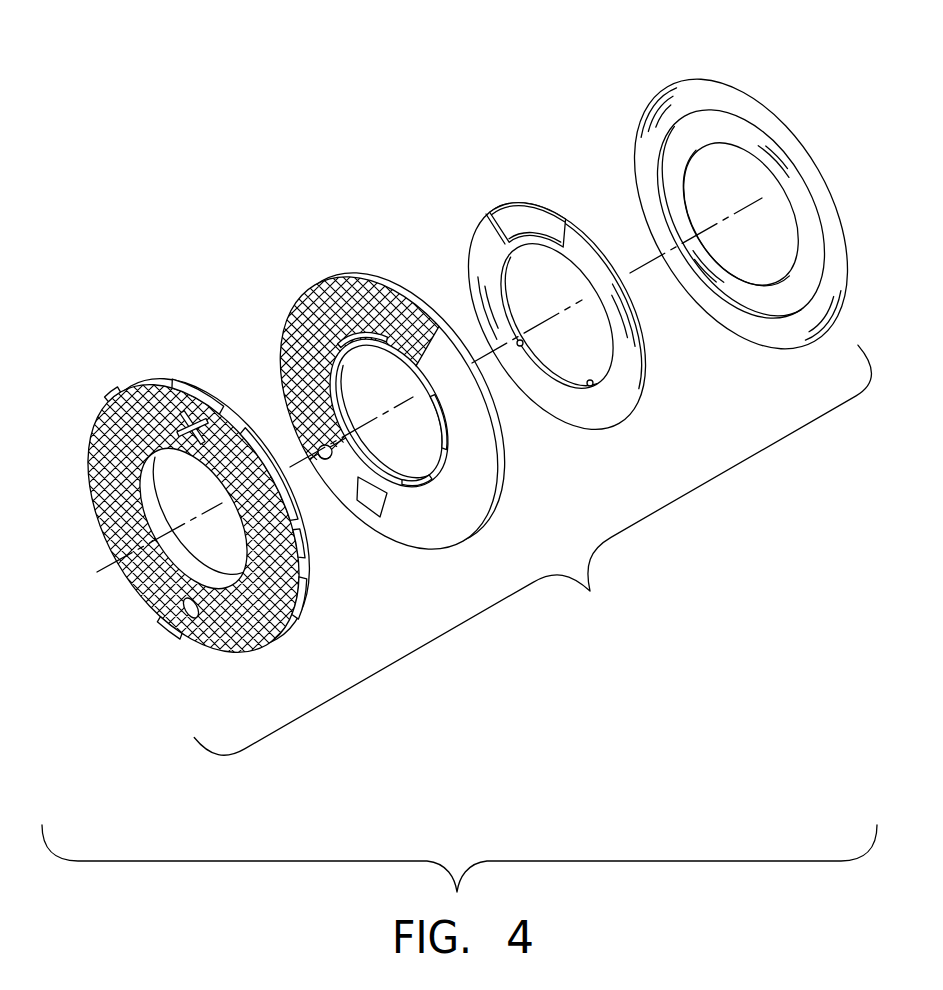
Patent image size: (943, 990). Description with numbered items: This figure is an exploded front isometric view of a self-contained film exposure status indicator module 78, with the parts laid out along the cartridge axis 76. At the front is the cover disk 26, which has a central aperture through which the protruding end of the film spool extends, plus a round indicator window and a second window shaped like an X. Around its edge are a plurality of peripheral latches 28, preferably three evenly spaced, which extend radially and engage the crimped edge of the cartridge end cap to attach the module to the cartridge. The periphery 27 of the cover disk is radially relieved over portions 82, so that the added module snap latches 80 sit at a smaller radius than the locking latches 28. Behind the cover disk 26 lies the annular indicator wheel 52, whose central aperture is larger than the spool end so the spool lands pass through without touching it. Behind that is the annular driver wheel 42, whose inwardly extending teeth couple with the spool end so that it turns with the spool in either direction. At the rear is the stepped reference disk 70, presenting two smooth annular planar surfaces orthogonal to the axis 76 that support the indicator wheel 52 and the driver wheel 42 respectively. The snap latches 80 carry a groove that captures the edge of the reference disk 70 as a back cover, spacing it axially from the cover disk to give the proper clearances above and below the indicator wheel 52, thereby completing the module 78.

The cover disk 26 is at (212, 522).
The periphery 27 is at (118, 394).
The peripheral latches 28 is at (196, 388).
The driver wheel 42 is at (488, 216).
The indicator wheel 52 is at (318, 278).
The stepped reference disk 70 is at (666, 88).
The cartridge axis 76 is at (107, 563).
The self-contained module 78 is at (544, 571).
The module snap latches 80 is at (97, 428).
The relieved portions 82 is at (300, 512).